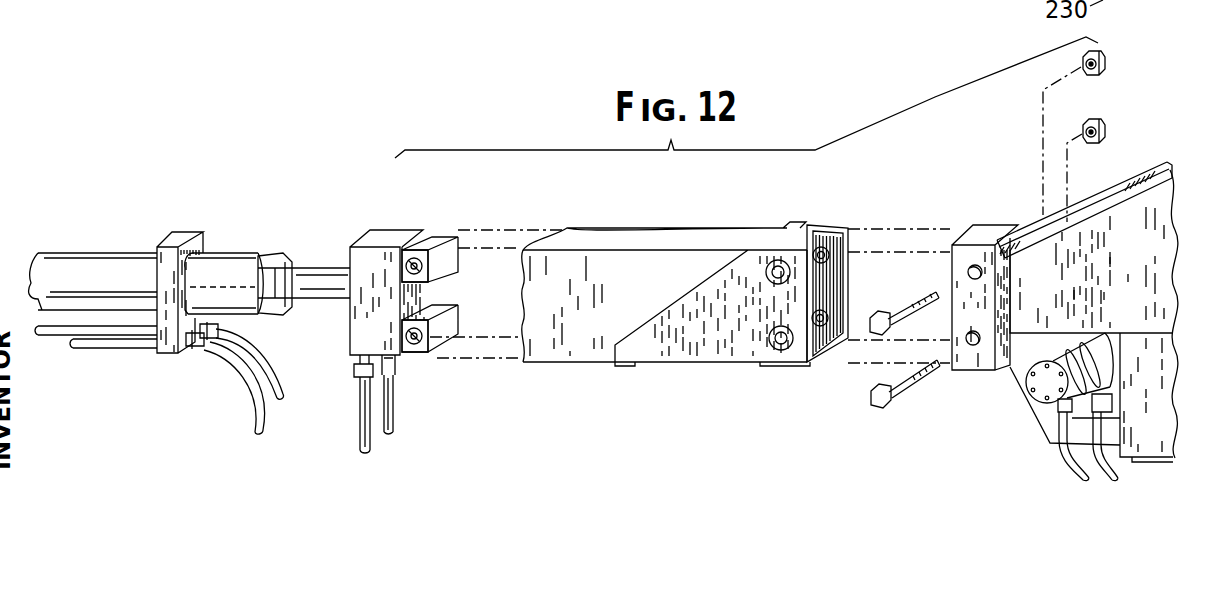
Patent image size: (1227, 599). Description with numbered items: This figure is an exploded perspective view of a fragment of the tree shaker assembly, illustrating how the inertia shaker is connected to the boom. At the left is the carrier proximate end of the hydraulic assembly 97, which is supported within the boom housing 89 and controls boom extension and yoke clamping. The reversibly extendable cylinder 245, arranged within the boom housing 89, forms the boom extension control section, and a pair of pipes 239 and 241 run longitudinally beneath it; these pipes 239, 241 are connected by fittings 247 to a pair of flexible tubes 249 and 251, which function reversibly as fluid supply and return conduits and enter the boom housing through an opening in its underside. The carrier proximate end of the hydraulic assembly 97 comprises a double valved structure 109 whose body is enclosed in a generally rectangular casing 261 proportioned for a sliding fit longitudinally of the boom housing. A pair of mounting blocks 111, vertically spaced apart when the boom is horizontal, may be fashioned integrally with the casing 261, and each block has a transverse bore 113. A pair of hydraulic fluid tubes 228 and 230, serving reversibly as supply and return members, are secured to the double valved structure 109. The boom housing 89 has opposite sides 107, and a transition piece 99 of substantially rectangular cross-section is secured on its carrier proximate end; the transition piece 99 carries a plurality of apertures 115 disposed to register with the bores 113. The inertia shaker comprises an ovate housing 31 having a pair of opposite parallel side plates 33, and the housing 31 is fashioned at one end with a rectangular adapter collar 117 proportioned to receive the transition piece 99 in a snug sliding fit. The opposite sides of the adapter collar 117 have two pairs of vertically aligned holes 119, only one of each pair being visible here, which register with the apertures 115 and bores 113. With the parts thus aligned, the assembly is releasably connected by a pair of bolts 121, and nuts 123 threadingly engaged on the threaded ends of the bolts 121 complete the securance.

The hydraulic assembly 97 is at (135, 226).
The reversibly extendable cylinder 245 is at (230, 252).
The pipe 241 is at (55, 338).
The pipe 239 is at (107, 349).
The fittings 247 is at (214, 350).
The flexible tube 249 is at (281, 398).
The flexible tube 251 is at (257, 417).
The casing 261 is at (361, 247).
The double valved structure 109 is at (404, 227).
The mounting blocks 111 is at (430, 245).
The transverse bore 113 is at (416, 264).
The hydraulic fluid tube 228 is at (360, 433).
The hydraulic fluid tube 230 is at (388, 430).
The boom housing 89 is at (657, 232).
The sides of boom housing 107 is at (572, 352).
The transition piece 99 is at (812, 228).
The apertures 115 is at (776, 328).
The bolts 121 is at (905, 298).
The rectangular adapter collar 117 is at (993, 224).
The holes 119 is at (976, 336).
The ovate housing 31 is at (1150, 168).
The side plates 33 is at (1160, 219).
The nuts 123 is at (1105, 45).